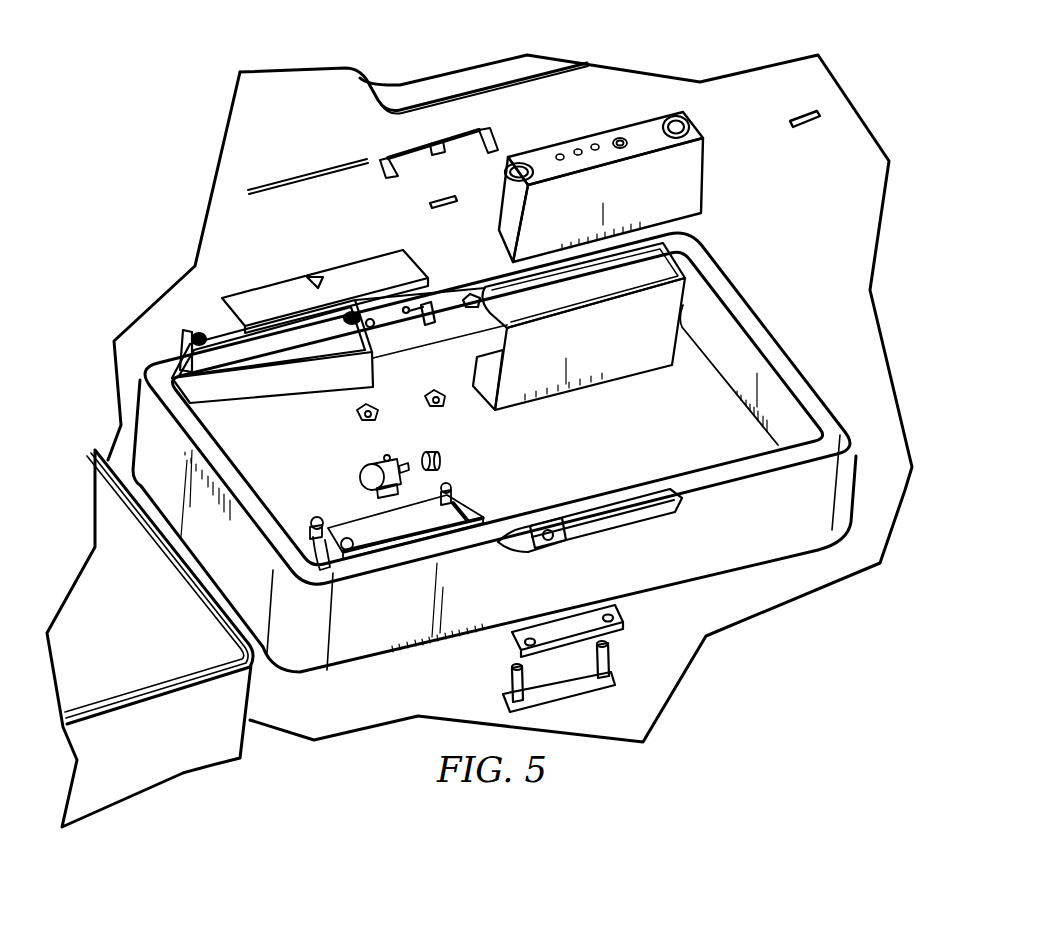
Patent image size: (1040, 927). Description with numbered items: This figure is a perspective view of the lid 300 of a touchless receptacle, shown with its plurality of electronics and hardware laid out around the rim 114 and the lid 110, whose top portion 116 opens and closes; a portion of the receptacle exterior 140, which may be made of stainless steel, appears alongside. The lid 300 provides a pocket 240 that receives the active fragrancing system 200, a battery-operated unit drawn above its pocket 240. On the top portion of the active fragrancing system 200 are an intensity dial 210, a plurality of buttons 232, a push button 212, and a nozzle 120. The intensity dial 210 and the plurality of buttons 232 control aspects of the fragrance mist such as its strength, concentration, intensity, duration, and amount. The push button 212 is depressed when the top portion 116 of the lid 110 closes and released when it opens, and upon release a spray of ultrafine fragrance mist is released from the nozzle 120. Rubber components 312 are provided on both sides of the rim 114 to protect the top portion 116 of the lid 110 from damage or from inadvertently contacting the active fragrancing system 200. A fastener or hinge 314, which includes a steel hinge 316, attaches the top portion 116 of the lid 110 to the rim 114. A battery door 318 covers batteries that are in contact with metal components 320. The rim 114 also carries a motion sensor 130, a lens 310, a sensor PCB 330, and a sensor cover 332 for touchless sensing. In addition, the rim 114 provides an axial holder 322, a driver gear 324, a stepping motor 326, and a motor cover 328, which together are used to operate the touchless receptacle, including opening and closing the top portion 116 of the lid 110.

The lid 300 is at (292, 30).
The lid 110 is at (852, 168).
The top portion of lid 116 is at (441, 88).
The exterior 140 is at (210, 737).
The rim 114 is at (760, 338).
The active fragrancing system 200 is at (601, 147).
The intensity dial 210 is at (513, 160).
The nozzle 120 is at (684, 118).
The push button 212 is at (627, 138).
The plurality of buttons 232 is at (595, 143).
The rubber components 312 is at (806, 110).
The fastener or hinge 314 is at (389, 148).
The steel hinge 316 is at (320, 166).
The battery door 318 is at (357, 262).
The metal components 320 is at (345, 316).
The pocket 240 is at (568, 299).
The axial holder 322 is at (378, 411).
The driver gear 324 is at (440, 462).
The stepping motor 326 is at (380, 463).
The motor cover 328 is at (364, 518).
The lens 310 is at (648, 516).
The motion sensor 130 is at (553, 540).
The sensor PCB 330 is at (572, 620).
The sensor cover 332 is at (575, 680).